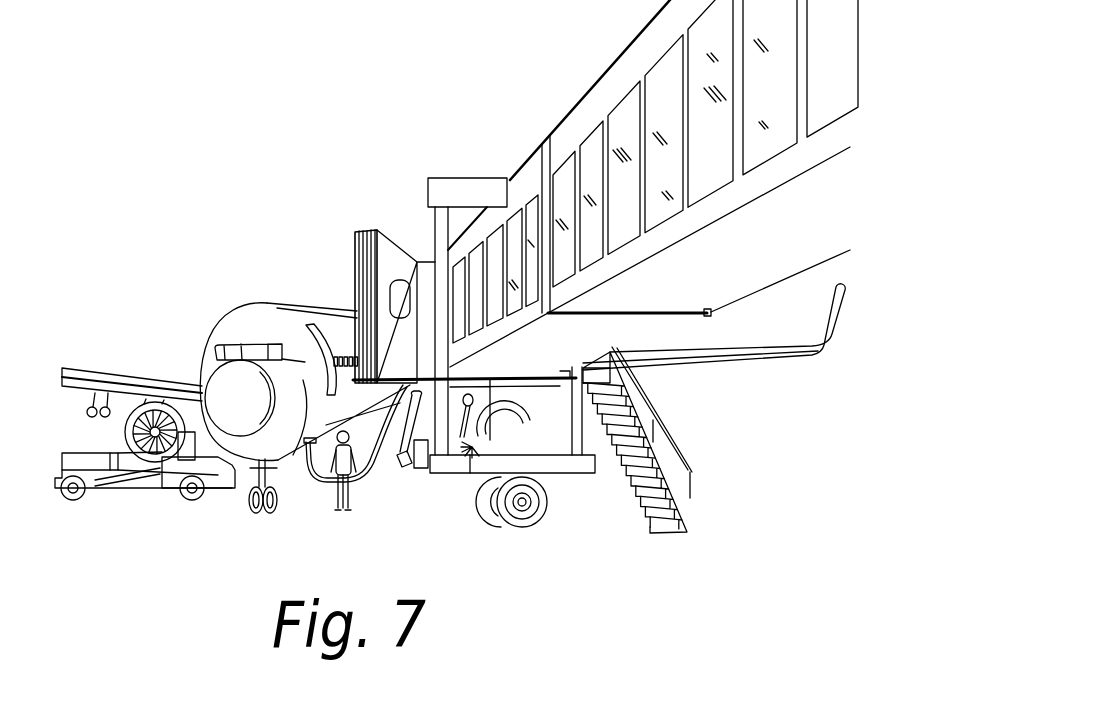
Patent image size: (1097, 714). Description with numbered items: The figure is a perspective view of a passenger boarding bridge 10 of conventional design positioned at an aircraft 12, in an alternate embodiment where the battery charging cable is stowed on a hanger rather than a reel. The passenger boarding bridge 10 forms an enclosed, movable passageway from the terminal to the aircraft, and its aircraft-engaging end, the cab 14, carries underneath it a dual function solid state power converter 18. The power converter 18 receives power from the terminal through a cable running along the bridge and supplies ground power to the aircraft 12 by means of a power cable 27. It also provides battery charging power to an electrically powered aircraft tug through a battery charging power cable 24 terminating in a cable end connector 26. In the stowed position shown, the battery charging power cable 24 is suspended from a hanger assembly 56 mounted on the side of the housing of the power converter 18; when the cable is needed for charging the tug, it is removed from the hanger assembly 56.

The passenger boarding bridge 10 is at (540, 102).
The aircraft 12 is at (233, 298).
The cab 14 is at (387, 252).
The dual function solid state power converter 18 is at (463, 432).
The battery charging power cable 24 is at (392, 450).
The cable end connector 26 is at (407, 468).
The power cable 27 is at (313, 479).
The hanger assembly 56 is at (352, 303).